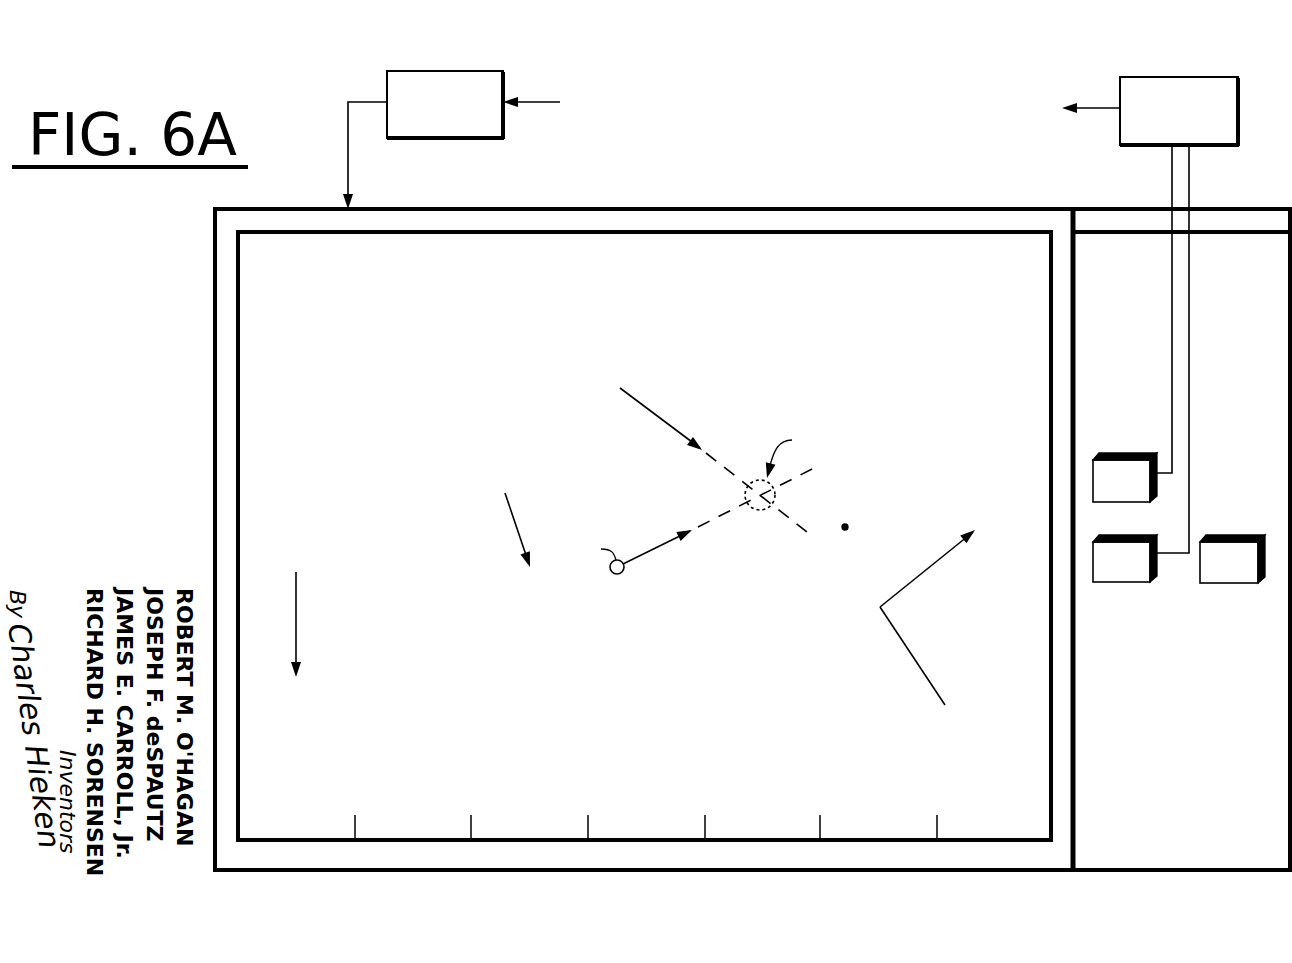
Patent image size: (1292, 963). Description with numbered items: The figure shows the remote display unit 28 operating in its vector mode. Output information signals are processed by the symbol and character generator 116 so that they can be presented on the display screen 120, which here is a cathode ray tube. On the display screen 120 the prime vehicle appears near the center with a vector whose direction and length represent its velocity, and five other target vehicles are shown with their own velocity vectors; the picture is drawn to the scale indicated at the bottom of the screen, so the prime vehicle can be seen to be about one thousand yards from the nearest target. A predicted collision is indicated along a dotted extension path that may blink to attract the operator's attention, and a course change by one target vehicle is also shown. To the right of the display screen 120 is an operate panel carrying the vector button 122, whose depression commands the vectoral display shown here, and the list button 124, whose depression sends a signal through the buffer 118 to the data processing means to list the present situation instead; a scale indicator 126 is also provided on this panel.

The remote display unit 28 is at (815, 209).
The display screen 120 is at (698, 283).
The symbol and character generator 116 is at (445, 71).
The buffer 118 is at (1189, 77).
The vector button 122 is at (1126, 453).
The list button 124 is at (1111, 582).
The scale display 126 is at (1246, 535).